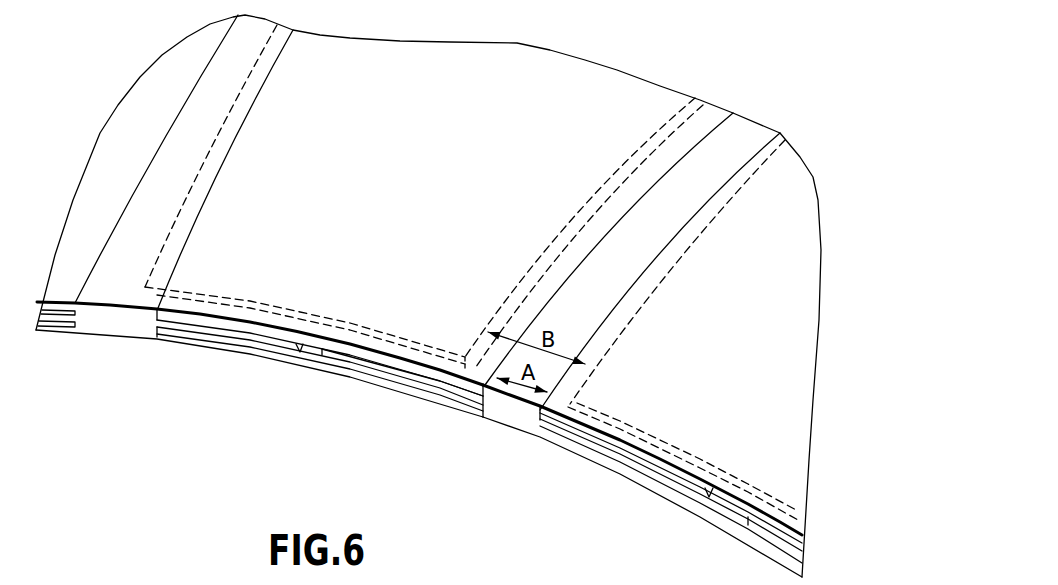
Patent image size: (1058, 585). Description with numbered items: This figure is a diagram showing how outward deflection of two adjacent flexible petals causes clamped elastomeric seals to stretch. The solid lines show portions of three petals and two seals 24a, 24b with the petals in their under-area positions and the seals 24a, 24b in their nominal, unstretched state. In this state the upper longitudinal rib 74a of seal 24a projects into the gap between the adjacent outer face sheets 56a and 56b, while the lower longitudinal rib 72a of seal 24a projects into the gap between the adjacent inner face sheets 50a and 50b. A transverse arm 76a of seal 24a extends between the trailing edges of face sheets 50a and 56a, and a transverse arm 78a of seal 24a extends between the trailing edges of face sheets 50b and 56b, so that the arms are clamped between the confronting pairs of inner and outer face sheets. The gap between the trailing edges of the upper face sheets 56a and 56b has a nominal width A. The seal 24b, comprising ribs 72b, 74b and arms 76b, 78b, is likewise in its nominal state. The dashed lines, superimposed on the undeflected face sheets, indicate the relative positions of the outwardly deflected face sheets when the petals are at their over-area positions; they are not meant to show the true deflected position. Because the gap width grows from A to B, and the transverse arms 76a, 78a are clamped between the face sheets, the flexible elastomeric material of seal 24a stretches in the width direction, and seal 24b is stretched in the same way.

The upper longitudinal rib 74a is at (635, 250).
The upper longitudinal rib 74b is at (147, 212).
The elastomeric seal 24a is at (496, 428).
The elastomeric seal 24b is at (108, 338).
The lower longitudinal rib 72a is at (528, 434).
The lower longitudinal rib 72b is at (134, 336).
The outer face sheet 56a is at (693, 480).
The outer face sheet 56b is at (207, 325).
The transverse arm 76a is at (667, 477).
The transverse arm 76b is at (267, 340).
The inner face sheet 50a is at (600, 452).
The inner face sheet 50b is at (323, 367).
The transverse arm 78a is at (385, 368).
The transverse arm 78b is at (50, 328).